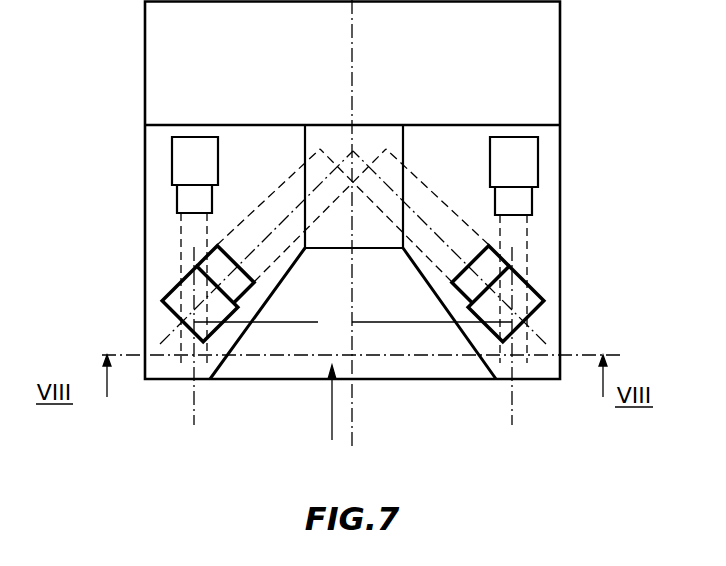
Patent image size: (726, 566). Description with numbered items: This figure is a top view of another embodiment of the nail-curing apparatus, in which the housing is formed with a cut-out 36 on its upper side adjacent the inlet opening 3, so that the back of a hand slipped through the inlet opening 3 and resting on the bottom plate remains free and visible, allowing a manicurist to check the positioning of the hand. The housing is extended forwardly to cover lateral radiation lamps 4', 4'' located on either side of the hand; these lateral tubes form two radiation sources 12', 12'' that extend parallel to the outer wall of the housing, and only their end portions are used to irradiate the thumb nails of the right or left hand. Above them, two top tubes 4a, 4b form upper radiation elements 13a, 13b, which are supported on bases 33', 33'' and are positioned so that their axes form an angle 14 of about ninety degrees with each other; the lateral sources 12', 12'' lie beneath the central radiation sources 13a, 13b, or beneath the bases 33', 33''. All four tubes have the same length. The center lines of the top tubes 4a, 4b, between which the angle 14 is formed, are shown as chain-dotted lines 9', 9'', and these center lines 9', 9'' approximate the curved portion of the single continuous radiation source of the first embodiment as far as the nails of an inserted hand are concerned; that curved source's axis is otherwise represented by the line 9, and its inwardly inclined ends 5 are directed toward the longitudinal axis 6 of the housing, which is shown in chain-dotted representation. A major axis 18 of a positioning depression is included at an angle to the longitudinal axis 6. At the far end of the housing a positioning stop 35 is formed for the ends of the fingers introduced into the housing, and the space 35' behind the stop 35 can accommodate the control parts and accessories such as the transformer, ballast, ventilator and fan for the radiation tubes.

The space 35' is at (376, 64).
The positioning stop 35 is at (372, 232).
The cut-out 36 is at (346, 286).
The angle 14 is at (363, 232).
The major axis 18 is at (353, 324).
The longitudinal axis 6 is at (356, 432).
The inlet opening 3 is at (327, 420).
The base 33' is at (146, 219).
The base 33'' is at (559, 218).
The lateral radiation lamp 4' is at (151, 288).
The lateral radiation lamp 4'' is at (550, 287).
The end of radiation source 5 is at (187, 357).
The radiation source 12' is at (165, 305).
The radiation source 12'' is at (543, 305).
The lamp axis line 9 is at (353, 341).
The top radiation tube 4a is at (277, 188).
The top radiation tube 4b is at (408, 173).
The center line 9' is at (256, 247).
The center line 9'' is at (449, 247).
The upper radiation element 13a is at (297, 180).
The upper radiation element 13b is at (386, 165).